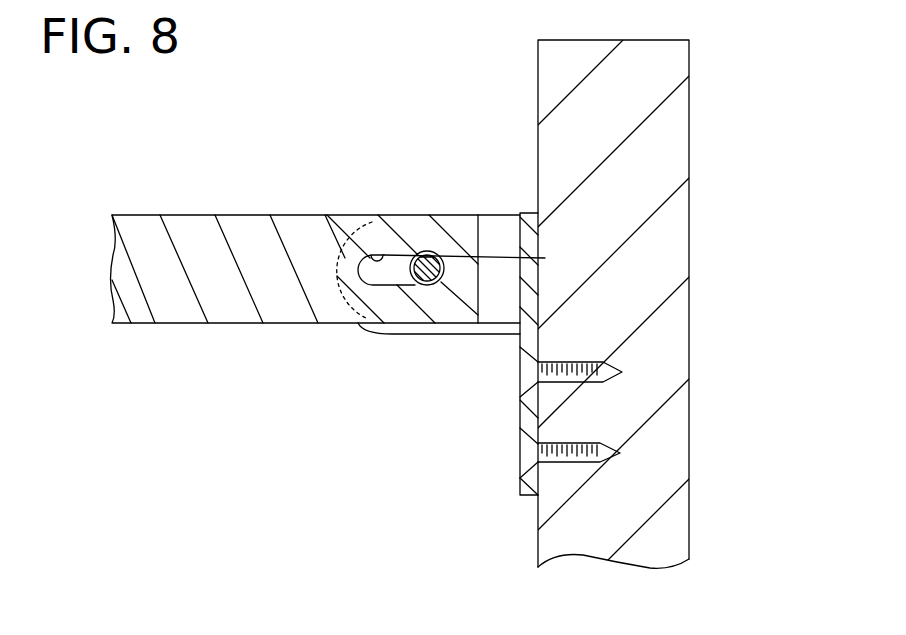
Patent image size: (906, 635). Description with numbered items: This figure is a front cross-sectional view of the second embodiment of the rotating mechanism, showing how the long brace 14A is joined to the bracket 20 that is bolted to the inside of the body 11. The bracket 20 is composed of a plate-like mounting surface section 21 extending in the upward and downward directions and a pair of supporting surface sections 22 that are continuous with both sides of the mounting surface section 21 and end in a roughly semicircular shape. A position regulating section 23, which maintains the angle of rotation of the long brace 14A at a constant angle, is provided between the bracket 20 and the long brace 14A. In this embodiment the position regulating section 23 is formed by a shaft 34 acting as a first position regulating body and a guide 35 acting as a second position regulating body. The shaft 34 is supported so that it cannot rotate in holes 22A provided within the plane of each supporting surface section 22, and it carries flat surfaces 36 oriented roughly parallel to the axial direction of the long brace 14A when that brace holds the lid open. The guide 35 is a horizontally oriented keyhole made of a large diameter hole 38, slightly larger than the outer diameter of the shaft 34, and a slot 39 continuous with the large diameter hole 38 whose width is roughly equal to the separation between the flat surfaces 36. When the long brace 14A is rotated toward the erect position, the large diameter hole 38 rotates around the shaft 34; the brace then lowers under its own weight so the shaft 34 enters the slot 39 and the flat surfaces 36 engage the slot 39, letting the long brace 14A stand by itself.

The body 11 is at (673, 127).
The long brace 14A is at (133, 227).
The bracket 20 is at (382, 348).
The mounting surface section 21 is at (520, 490).
The supporting surface section 22 is at (487, 334).
The hole 22A is at (417, 258).
The position regulating section 23 is at (457, 241).
The shaft 34 is at (482, 259).
The guide 35 is at (465, 167).
The flat surface 36 is at (446, 282).
The large diameter hole 38 is at (432, 251).
The slot 39 is at (379, 252).